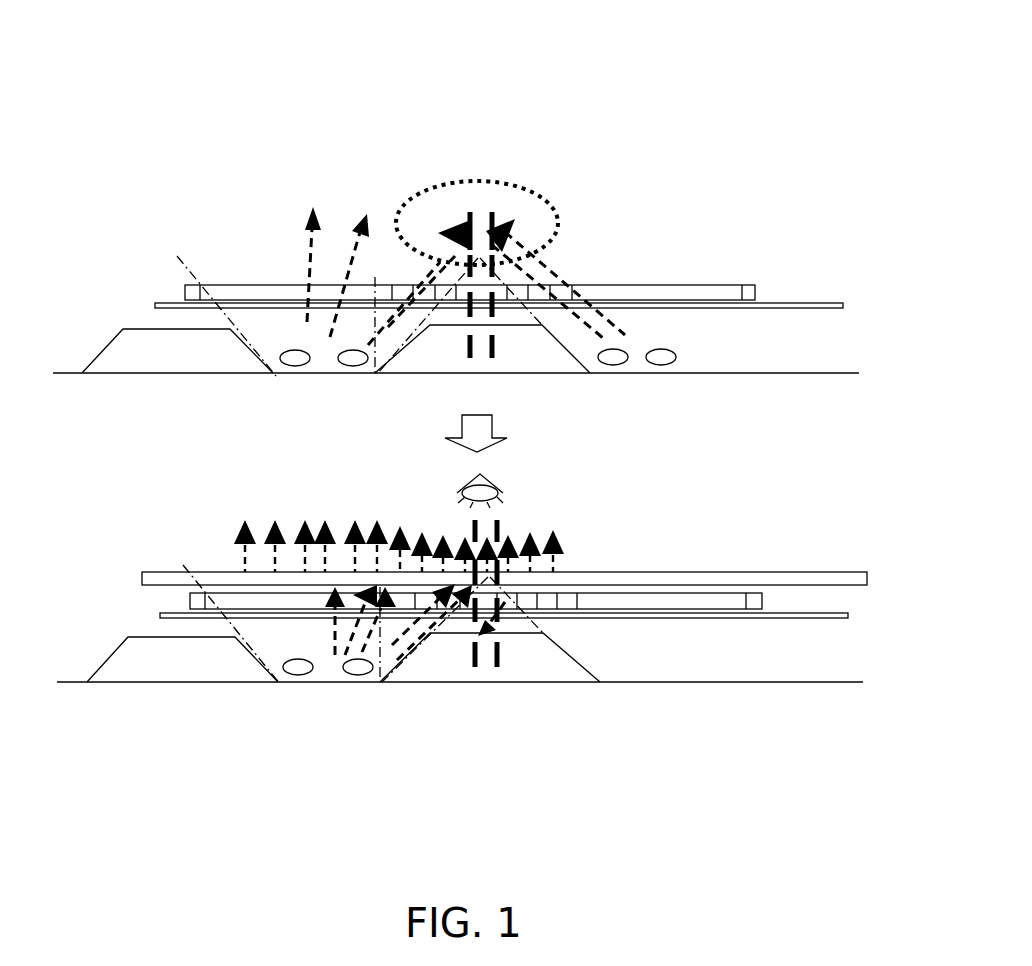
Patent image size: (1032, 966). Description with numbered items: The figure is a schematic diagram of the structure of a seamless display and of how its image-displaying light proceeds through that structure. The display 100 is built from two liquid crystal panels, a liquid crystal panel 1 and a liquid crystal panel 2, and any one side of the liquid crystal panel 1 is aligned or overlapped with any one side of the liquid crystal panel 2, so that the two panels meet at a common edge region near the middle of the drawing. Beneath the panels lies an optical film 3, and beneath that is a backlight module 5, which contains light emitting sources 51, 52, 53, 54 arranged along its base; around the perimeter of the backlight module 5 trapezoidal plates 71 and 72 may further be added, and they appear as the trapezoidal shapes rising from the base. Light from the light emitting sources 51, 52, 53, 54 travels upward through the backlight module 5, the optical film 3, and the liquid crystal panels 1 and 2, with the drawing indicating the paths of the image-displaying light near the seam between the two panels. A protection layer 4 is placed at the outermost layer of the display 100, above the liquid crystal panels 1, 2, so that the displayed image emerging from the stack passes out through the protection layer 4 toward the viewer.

The display 100 is at (533, 87).
The liquid crystal panel 1 is at (283, 289).
The liquid crystal panel 2 is at (633, 289).
The optical film 3 is at (688, 306).
The protection layer 4 is at (615, 572).
The backlight module 5 is at (768, 372).
The light emitting source 51 is at (297, 366).
The light emitting source 52 is at (353, 362).
The light emitting source 53 is at (617, 358).
The light emitting source 54 is at (663, 357).
The trapezoidal plate 71 is at (141, 358).
The trapezoidal plate 72 is at (528, 358).